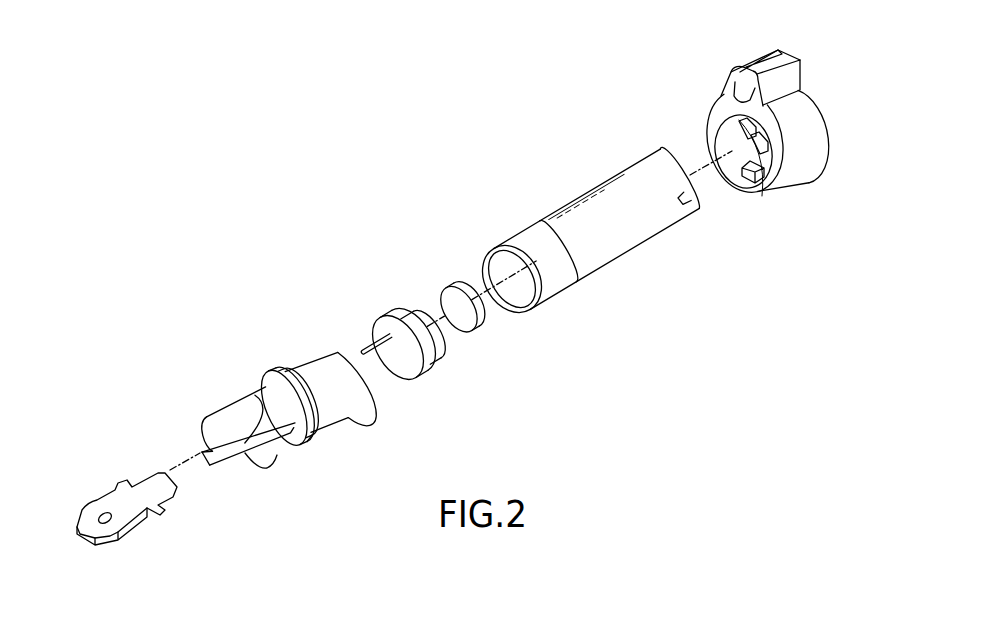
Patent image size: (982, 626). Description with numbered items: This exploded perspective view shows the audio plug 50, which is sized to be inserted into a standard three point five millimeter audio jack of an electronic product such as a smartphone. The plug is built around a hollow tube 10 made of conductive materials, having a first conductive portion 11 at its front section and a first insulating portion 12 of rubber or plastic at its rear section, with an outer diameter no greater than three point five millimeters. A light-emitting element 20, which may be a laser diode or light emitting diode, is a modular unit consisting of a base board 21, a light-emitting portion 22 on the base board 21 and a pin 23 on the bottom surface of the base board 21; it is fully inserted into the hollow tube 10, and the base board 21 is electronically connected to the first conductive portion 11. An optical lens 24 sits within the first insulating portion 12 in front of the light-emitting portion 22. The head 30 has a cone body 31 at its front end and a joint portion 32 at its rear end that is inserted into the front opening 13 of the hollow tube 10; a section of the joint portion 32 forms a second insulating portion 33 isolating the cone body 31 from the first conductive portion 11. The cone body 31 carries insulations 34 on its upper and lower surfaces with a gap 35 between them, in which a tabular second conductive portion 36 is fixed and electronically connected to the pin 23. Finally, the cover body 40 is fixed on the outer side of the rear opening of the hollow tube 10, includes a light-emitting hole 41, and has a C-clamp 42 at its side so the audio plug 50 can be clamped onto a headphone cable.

The hollow tube 10 is at (481, 230).
The first conductive portion 11 is at (555, 282).
The first insulating portion 12 is at (625, 230).
The front opening 13 is at (517, 293).
The light-emitting element 20 is at (388, 306).
The base board 21 is at (423, 363).
The light-emitting portion 22 is at (435, 343).
The pin 23 is at (374, 352).
The optical lens 24 is at (458, 298).
The head 30 is at (301, 300).
The cone body 31 is at (227, 396).
The joint portion 32 is at (312, 372).
The second insulating portion 33 is at (327, 430).
The insulations 34 is at (265, 468).
The gap 35 is at (233, 458).
The second conductive portion 36 is at (123, 513).
The cover body 40 is at (687, 76).
The light-emitting hole 41 is at (758, 165).
The C-clamp 42 is at (790, 76).
The audio plug 50 is at (589, 83).